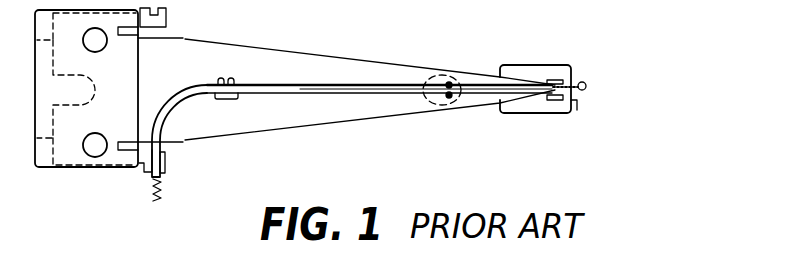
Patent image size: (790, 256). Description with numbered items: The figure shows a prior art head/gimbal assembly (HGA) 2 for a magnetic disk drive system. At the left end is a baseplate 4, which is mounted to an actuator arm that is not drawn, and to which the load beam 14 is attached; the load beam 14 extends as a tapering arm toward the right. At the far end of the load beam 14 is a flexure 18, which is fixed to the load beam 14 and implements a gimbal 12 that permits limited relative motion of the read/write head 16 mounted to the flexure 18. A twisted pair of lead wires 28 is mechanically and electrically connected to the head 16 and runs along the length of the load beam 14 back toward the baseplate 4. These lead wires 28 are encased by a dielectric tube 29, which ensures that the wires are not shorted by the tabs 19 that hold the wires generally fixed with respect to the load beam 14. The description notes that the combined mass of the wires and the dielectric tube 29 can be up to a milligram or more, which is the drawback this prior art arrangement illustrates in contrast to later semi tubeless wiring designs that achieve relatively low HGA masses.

The head/gimbal assembly 2 is at (391, 100).
The baseplate 4 is at (47, 168).
The gimbal 12 is at (557, 82).
The load beam 14 is at (397, 67).
The read/write head 16 is at (532, 65).
The flexure 18 is at (580, 98).
The tabs 19 is at (228, 99).
The lead wires 28 is at (587, 84).
The dielectric tube 29 is at (378, 94).